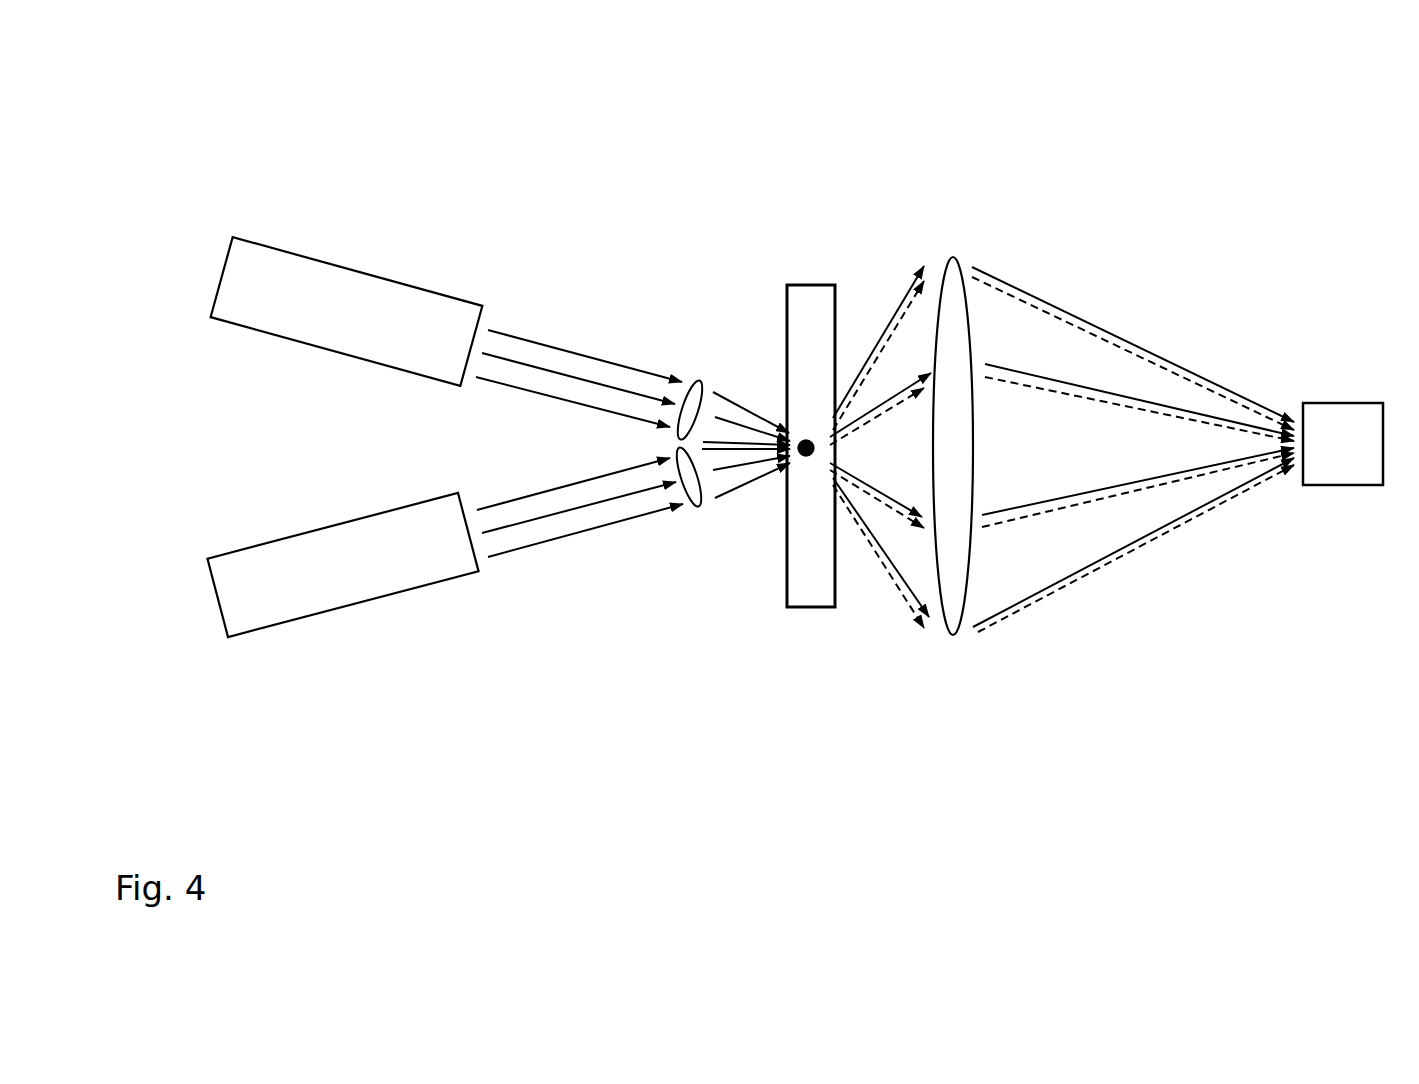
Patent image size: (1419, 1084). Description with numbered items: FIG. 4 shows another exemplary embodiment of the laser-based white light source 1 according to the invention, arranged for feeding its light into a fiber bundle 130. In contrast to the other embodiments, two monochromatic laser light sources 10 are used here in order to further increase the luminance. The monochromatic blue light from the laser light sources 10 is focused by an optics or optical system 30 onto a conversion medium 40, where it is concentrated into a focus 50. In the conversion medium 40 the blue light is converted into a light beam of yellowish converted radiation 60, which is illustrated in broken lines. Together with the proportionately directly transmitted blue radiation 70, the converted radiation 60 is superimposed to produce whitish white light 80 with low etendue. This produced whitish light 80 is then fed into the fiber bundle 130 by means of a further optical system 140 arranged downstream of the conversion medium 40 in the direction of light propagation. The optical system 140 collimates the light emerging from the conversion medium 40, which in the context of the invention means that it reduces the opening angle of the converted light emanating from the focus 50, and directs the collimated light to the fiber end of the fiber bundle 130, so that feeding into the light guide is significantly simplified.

The white light source 1 is at (727, 226).
The laser light source 10 is at (332, 375).
The optical system 30 is at (670, 528).
The conversion medium 40 is at (812, 613).
The focus 50 is at (807, 467).
The white light 80 is at (900, 275).
The optical system 140 is at (962, 236).
The directly transmitted blue radiation 70 is at (1188, 370).
The converted radiation 60 is at (1115, 560).
The fiber bundle 130 is at (1338, 393).